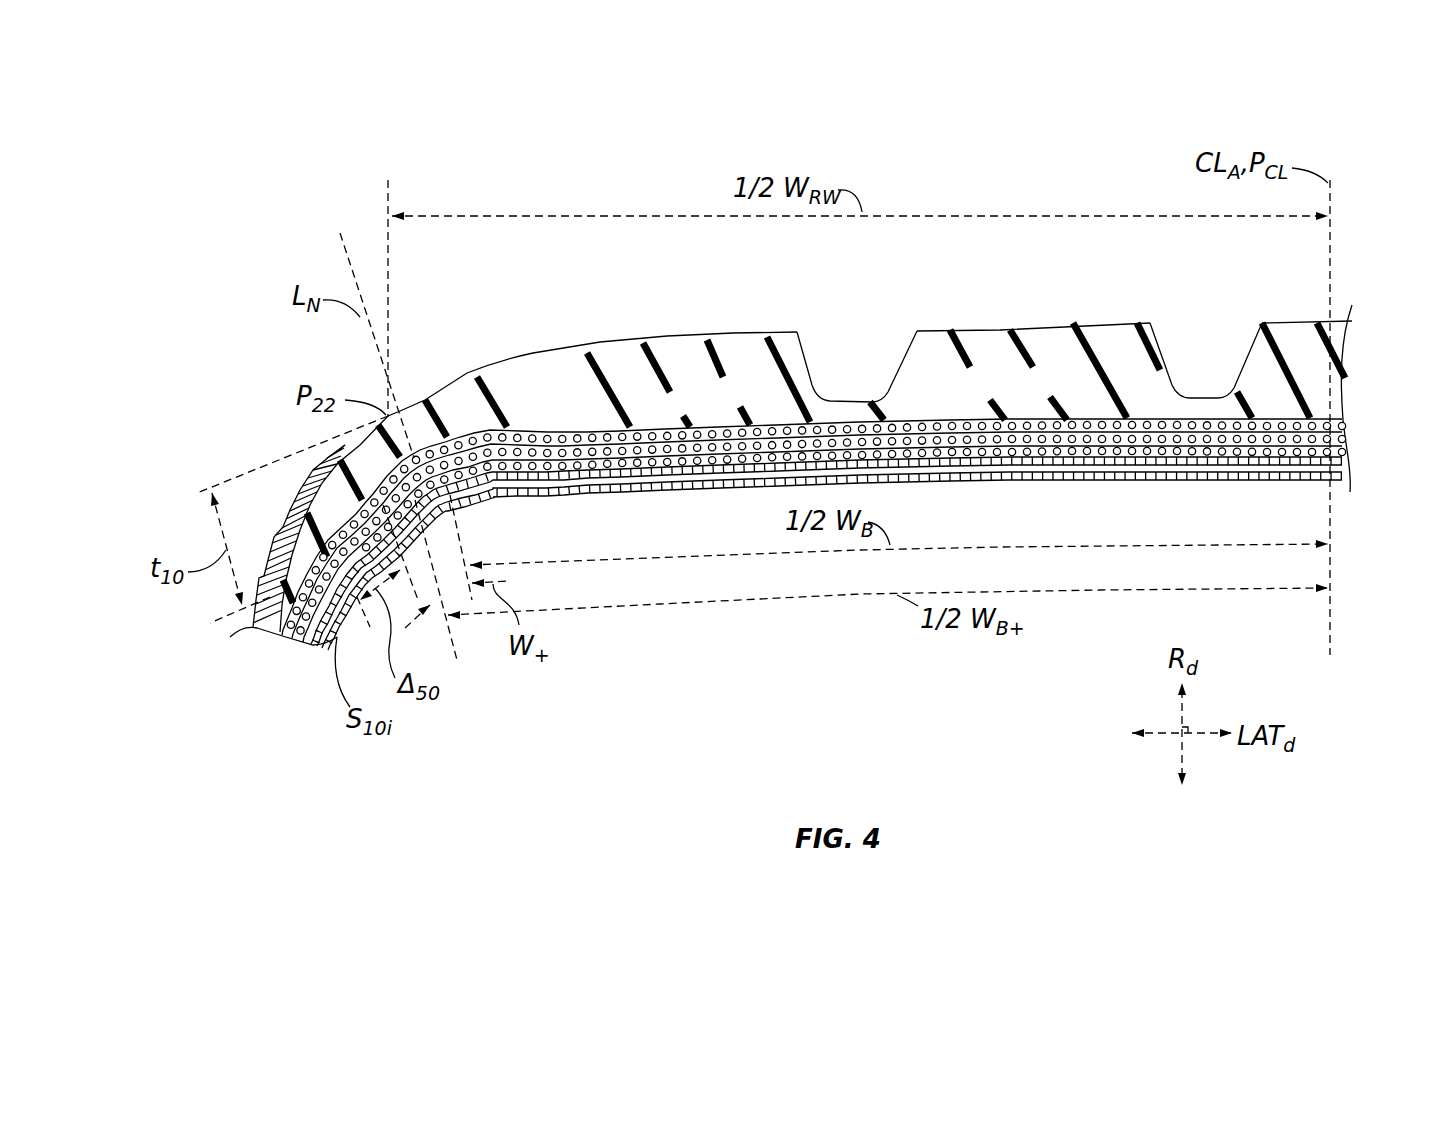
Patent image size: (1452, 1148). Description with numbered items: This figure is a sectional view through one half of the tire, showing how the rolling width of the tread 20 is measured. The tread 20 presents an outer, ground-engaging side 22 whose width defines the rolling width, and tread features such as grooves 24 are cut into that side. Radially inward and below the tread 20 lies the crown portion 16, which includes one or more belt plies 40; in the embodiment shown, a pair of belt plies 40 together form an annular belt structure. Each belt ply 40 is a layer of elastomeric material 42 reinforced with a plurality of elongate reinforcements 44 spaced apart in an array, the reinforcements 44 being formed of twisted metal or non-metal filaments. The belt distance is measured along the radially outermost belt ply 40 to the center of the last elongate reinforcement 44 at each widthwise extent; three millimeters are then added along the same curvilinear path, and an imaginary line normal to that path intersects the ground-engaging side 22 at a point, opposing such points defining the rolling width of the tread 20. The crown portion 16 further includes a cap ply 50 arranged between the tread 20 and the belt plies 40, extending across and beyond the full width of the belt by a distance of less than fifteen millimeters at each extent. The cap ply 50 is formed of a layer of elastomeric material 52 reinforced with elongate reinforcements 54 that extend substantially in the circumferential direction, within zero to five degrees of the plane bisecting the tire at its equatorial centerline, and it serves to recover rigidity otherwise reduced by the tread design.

The crown portion 16 is at (1160, 479).
The tread 20 is at (1097, 325).
The outer, ground-engaging side 22 is at (657, 345).
The groove 24 is at (858, 366).
The belt ply 40 is at (1337, 437).
The layer of elastomeric material 42 is at (963, 428).
The elongate reinforcement 44 is at (1012, 440).
The cap ply 50 is at (1337, 417).
The layer of elastomeric material 52 is at (683, 428).
The elongate reinforcement 54 is at (737, 432).